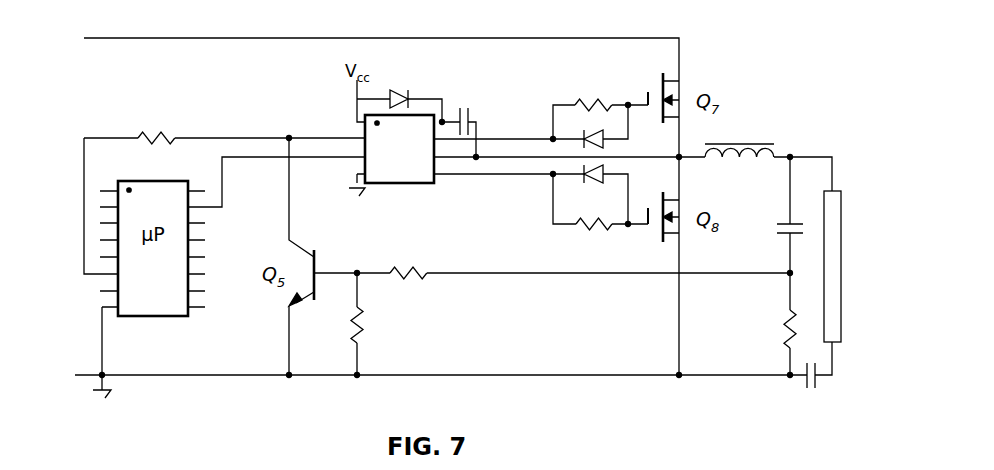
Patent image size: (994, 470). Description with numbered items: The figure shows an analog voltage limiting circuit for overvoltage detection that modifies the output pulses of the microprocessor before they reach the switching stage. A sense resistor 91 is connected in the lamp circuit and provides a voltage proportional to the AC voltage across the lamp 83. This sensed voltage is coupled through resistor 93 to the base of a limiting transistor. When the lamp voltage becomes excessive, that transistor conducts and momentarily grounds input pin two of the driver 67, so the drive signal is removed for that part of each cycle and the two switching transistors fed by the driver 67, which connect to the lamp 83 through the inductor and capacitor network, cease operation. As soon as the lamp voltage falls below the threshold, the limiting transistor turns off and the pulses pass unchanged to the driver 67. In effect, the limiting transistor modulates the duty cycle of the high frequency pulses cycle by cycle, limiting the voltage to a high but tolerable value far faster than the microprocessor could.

The driver 67 is at (390, 183).
The lamp 83 is at (842, 285).
The sense resistor 91 is at (782, 331).
The resistor 93 is at (412, 287).